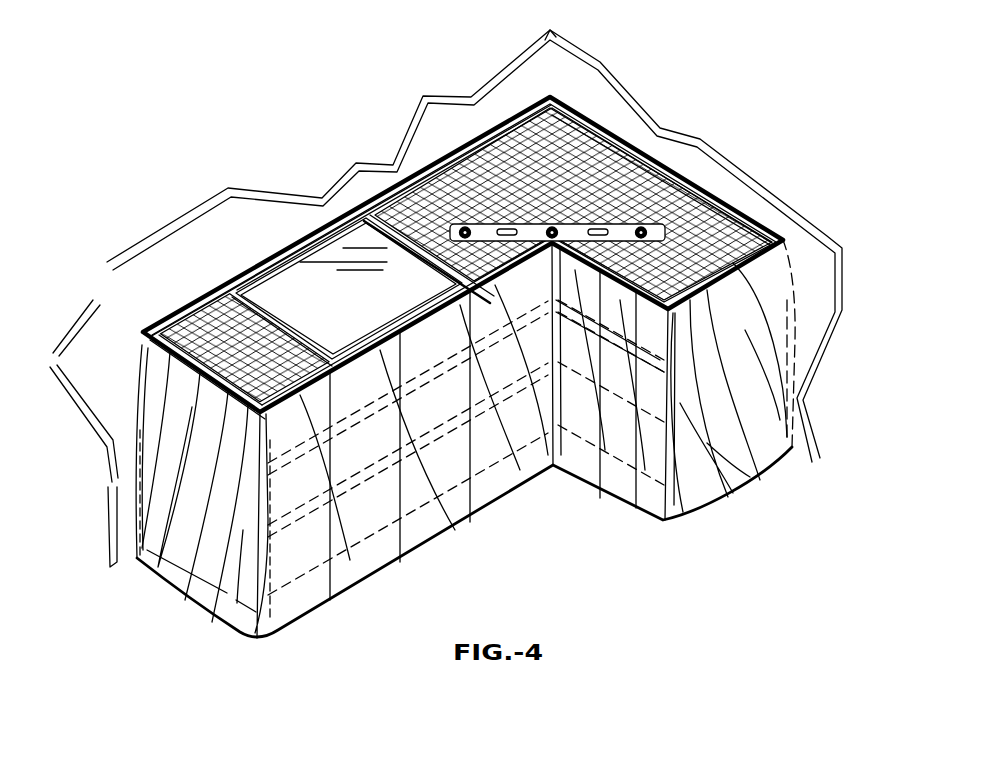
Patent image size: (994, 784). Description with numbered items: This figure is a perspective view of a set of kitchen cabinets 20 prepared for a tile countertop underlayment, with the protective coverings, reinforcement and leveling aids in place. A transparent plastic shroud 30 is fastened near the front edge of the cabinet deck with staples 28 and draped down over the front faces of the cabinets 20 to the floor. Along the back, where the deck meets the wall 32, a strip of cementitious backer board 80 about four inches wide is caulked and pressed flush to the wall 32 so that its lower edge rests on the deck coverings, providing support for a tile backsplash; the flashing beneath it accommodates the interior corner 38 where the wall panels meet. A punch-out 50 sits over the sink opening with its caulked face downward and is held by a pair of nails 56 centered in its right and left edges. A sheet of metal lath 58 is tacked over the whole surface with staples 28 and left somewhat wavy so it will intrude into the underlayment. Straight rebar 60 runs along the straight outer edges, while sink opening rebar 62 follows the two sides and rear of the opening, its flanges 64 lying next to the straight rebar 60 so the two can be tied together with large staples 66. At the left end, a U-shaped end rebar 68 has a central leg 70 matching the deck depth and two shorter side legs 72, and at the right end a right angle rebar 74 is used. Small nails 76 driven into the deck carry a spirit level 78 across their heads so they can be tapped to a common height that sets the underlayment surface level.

The kitchen cabinets 20 is at (558, 518).
The staples 28 is at (447, 186).
The plastic shroud 30 is at (240, 628).
The wall 32 is at (107, 267).
The interior corner 38 is at (589, 58).
The punch-out 50 is at (349, 288).
The nails 56 is at (292, 313).
The metal lath 58 is at (513, 143).
The straight rebar 60 is at (620, 213).
The sink opening rebar 62 is at (370, 213).
The flanges 64 is at (449, 232).
The large staples 66 is at (642, 147).
The end rebar 68 is at (194, 375).
The central leg 70 is at (209, 436).
The side legs 72 is at (183, 322).
The right angle rebar 74 is at (722, 282).
The nail 76 is at (497, 277).
The spirit level 78 is at (682, 226).
The cementitious backer board 80 is at (290, 248).